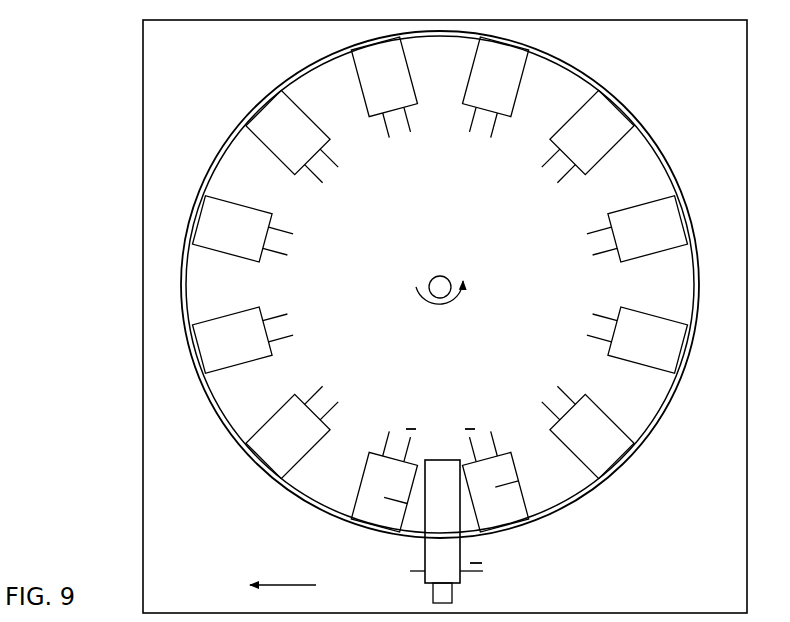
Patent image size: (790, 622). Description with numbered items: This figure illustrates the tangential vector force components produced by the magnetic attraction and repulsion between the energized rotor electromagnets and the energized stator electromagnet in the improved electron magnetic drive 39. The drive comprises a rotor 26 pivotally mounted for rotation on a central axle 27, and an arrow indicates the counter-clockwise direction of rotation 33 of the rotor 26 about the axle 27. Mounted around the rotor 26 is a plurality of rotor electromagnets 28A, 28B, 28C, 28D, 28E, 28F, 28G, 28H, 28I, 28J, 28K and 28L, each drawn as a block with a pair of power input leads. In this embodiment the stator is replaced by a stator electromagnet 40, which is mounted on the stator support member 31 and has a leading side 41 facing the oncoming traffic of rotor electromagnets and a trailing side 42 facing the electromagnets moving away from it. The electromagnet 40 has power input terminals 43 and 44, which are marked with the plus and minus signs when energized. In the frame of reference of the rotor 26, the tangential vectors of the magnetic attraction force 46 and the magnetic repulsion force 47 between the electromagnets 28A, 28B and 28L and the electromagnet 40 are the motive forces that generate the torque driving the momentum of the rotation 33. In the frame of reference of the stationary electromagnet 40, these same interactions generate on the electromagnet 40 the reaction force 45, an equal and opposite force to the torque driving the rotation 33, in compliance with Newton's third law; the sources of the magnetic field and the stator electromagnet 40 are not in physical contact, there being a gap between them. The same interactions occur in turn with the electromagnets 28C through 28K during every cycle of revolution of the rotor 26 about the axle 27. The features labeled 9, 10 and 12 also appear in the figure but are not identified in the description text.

The first lead 9 is at (287, 261).
The second lead 10 is at (291, 238).
The housing 12 is at (663, 581).
The rotor 26 is at (230, 397).
The central axle 27 is at (437, 274).
The rotor electromagnet 28A is at (375, 487).
The rotor electromagnet 28B is at (303, 433).
The rotor electromagnet 28C is at (213, 325).
The rotor electromagnet 28D is at (230, 220).
The rotor electromagnet 28E is at (283, 124).
The rotor electromagnet 28F is at (386, 79).
The rotor electromagnet 28G is at (502, 90).
The rotor electromagnet 28H is at (595, 139).
The rotor electromagnet 28I is at (663, 226).
The rotor electromagnet 28J is at (637, 309).
The rotor electromagnet 28K is at (595, 421).
The rotor electromagnet 28L is at (513, 504).
The stator support member 31 is at (446, 593).
The rotation 33 is at (475, 283).
The improved electron magnetic drive 39 is at (100, 436).
The stator electromagnet 40 is at (448, 467).
The leading side 41 is at (417, 463).
The trailing side 42 is at (460, 556).
The power input terminal 43 is at (418, 572).
The power input terminal 44 is at (467, 574).
The reaction force 45 is at (253, 585).
The magnetic attraction force 46 is at (417, 507).
The magnetic repulsion force 47 is at (528, 482).